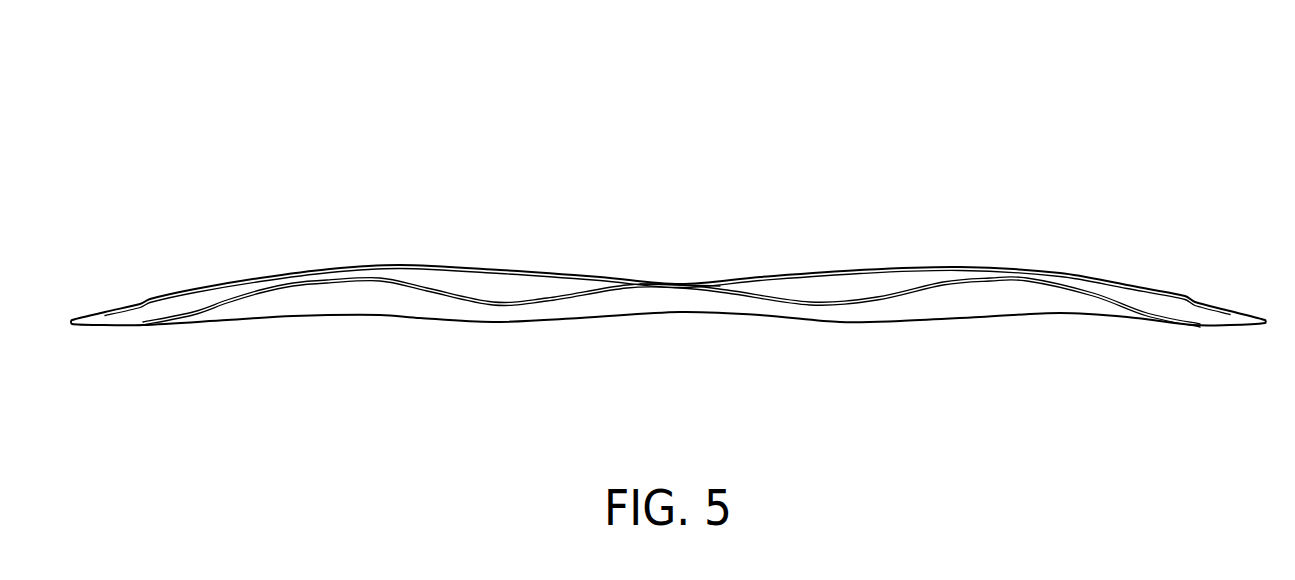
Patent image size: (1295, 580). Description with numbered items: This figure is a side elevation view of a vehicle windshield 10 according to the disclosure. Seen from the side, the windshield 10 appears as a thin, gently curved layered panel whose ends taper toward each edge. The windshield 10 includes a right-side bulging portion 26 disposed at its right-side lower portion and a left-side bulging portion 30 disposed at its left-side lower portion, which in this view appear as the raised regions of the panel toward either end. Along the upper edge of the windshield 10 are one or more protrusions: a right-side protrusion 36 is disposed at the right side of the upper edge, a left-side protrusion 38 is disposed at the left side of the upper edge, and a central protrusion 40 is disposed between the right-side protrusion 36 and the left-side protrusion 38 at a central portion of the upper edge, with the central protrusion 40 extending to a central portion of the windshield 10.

The windshield 10 is at (809, 114).
The right-side bulging portion 26 is at (572, 273).
The left-side bulging portion 30 is at (853, 268).
The right-side protrusion 36 is at (380, 277).
The left-side protrusion 38 is at (961, 280).
The central protrusion 40 is at (678, 284).